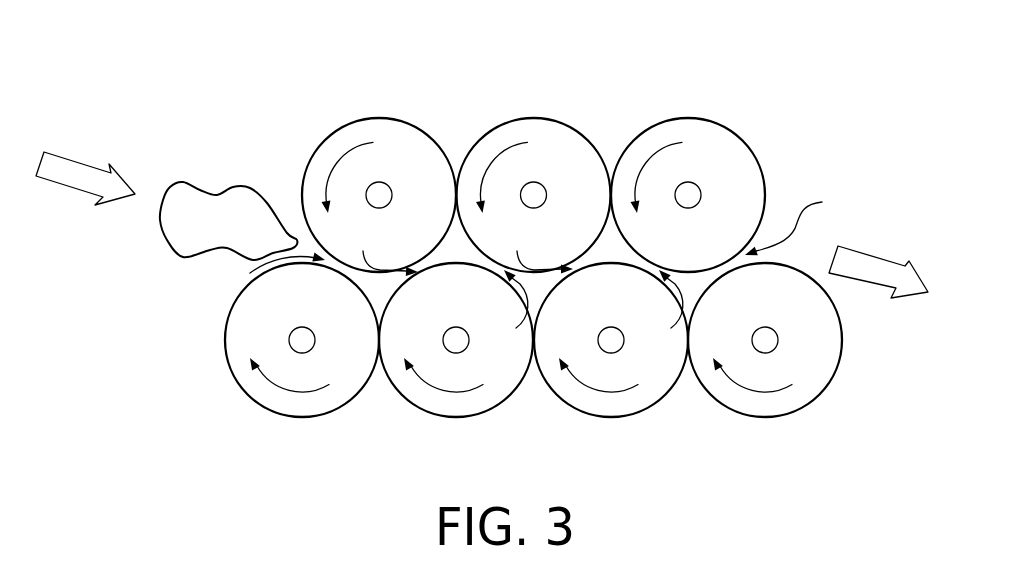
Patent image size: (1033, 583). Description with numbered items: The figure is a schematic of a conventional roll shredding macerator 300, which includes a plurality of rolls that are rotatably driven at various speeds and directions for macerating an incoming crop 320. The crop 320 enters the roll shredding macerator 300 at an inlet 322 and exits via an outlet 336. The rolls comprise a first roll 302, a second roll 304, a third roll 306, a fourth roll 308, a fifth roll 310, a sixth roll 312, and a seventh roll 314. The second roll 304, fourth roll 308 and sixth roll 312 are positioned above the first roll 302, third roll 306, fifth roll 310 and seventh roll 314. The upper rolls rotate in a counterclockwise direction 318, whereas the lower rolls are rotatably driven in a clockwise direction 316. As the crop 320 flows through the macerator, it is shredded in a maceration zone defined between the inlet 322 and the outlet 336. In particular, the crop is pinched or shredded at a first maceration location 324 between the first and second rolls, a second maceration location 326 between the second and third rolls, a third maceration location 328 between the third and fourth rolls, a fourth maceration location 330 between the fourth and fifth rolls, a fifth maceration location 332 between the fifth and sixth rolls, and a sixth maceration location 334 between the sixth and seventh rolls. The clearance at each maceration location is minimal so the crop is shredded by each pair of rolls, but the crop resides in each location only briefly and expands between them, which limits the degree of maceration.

The roll shredding macerator 300 is at (191, 77).
The first roll 302 is at (308, 417).
The second roll 304 is at (383, 118).
The third roll 306 is at (462, 417).
The fourth roll 308 is at (538, 118).
The fifth roll 310 is at (617, 417).
The sixth roll 312 is at (692, 118).
The seventh roll 314 is at (771, 417).
The clockwise direction 316 is at (279, 388).
The counterclockwise direction 318 is at (348, 153).
The crop 320 is at (224, 190).
The inlet 322 is at (82, 162).
The first maceration location 324 is at (249, 273).
The second maceration location 326 is at (382, 250).
The third maceration location 328 is at (502, 313).
The fourth maceration location 330 is at (537, 248).
The fifth maceration location 332 is at (657, 313).
The sixth maceration location 334 is at (807, 221).
The outlet 336 is at (873, 285).